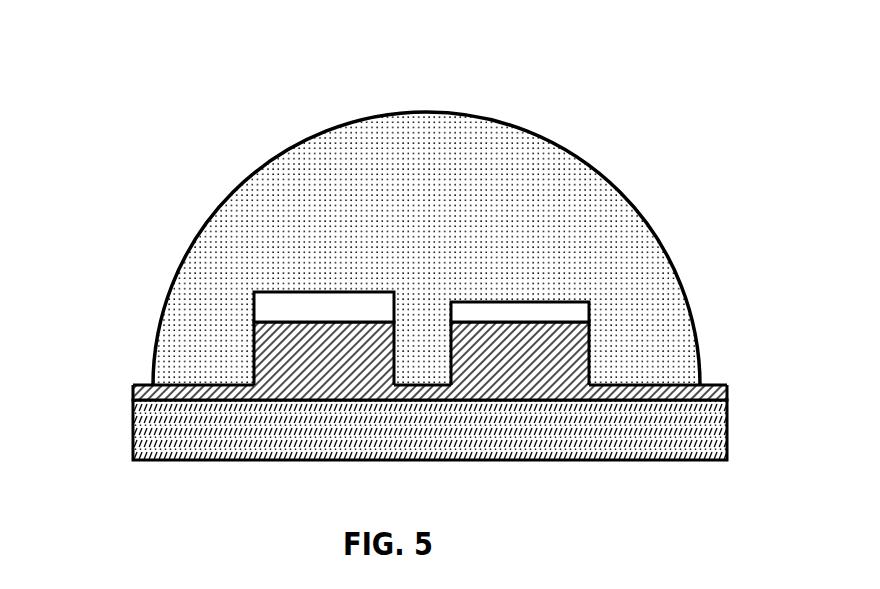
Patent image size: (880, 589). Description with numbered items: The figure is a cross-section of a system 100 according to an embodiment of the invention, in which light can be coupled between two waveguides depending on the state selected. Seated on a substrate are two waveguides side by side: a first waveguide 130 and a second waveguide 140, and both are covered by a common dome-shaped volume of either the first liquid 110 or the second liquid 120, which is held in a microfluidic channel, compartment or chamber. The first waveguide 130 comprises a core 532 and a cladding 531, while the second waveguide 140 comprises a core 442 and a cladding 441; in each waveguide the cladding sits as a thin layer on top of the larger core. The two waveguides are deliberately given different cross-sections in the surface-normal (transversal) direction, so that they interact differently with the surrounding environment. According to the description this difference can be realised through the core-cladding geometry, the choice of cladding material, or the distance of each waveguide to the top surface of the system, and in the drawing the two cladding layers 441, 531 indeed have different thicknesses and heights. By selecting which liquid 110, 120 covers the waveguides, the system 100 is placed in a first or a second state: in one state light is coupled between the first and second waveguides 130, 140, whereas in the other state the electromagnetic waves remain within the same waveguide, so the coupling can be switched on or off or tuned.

The system 100 is at (385, 236).
The first liquid 110 is at (437, 249).
The second liquid 120 is at (588, 208).
The first waveguide 130 is at (218, 291).
The second waveguide 140 is at (474, 198).
The cladding 441 is at (315, 302).
The core 442 is at (293, 358).
The cladding 531 is at (515, 310).
The core 532 is at (475, 345).